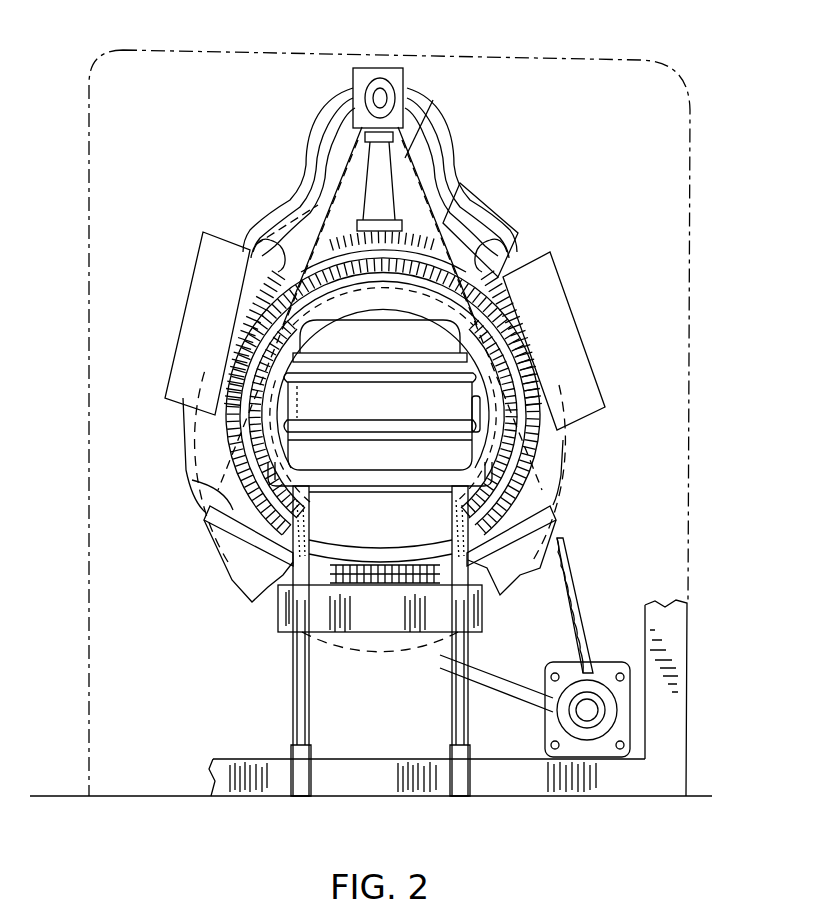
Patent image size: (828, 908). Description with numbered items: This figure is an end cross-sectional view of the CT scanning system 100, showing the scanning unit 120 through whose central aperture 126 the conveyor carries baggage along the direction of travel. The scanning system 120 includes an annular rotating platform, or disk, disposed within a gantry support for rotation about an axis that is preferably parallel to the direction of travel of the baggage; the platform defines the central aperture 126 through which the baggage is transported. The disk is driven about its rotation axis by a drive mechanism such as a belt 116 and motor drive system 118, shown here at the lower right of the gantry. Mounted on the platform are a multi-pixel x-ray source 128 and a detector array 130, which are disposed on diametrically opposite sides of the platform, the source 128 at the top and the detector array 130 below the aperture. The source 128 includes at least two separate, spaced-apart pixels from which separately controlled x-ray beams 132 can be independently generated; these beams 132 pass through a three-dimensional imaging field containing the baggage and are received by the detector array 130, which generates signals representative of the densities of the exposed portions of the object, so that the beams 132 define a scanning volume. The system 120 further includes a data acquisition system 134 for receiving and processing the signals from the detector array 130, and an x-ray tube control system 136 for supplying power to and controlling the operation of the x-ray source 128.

The CT scanning system 100 is at (200, 847).
The belt 116 is at (573, 578).
The motor drive system 118 is at (587, 708).
The CT scanning system 120 is at (158, 49).
The central aperture 126 is at (400, 528).
The multi-pixel x-ray source 128 is at (368, 70).
The detector array 130 is at (192, 480).
The x-ray beams 132 is at (527, 506).
The data acquisition system 134 is at (287, 605).
The x-ray tube control system 136 is at (203, 285).